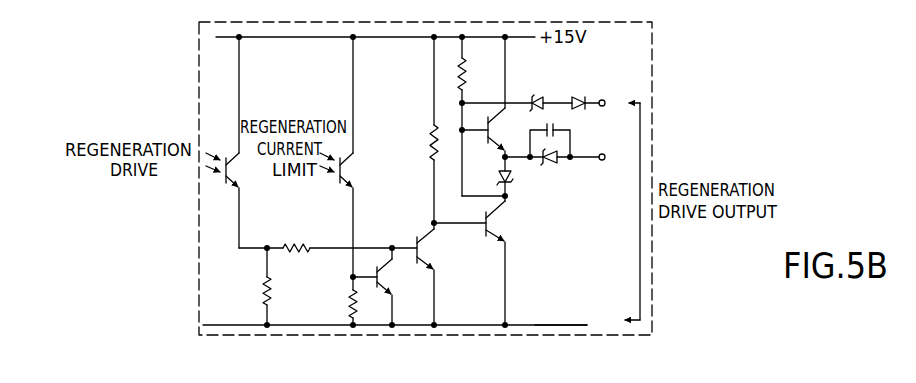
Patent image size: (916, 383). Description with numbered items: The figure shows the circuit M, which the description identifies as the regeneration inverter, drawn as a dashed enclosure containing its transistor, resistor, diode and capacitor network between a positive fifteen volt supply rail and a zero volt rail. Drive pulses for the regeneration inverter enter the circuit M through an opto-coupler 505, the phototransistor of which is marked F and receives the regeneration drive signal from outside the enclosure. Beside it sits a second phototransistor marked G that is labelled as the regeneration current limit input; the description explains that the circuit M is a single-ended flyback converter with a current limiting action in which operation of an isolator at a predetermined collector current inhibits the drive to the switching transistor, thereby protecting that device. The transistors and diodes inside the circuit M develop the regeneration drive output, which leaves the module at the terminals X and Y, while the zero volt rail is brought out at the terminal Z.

The opto-coupler 505 is at (232, 163).
The regeneration drive phototransistor F is at (231, 141).
The regeneration current limit phototransistor G is at (346, 162).
The circuit M is at (425, 178).
The regeneration drive output terminal X is at (543, 103).
The regeneration drive output terminal Y is at (564, 146).
The 0 V terminal Z is at (584, 325).